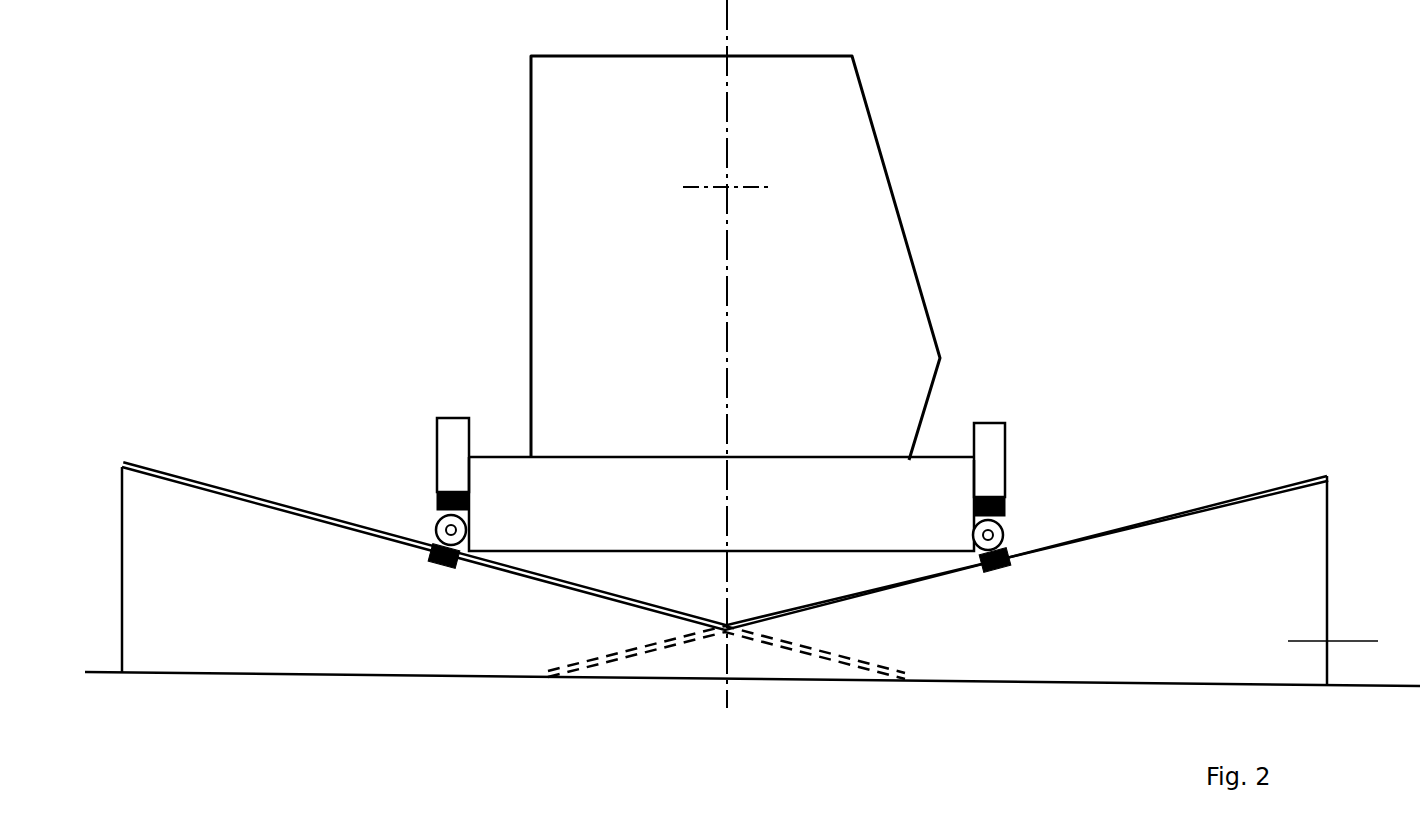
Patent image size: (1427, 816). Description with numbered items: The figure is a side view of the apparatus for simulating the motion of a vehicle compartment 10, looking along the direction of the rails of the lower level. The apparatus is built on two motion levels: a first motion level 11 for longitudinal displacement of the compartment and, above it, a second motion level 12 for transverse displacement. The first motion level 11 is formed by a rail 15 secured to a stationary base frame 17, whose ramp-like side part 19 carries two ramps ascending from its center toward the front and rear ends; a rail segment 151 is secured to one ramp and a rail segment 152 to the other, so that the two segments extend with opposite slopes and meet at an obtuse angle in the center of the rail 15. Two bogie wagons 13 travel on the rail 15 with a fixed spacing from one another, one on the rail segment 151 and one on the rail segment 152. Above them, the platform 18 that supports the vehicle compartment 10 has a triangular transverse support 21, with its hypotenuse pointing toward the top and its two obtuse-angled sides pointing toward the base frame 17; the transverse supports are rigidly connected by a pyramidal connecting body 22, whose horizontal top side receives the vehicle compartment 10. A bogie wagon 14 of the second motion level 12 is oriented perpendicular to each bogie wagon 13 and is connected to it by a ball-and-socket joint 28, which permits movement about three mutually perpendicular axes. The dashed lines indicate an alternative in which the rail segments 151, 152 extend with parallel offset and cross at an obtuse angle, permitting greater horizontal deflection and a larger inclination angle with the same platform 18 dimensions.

The vehicle compartment 10 is at (681, 287).
The first motion level 11 is at (428, 571).
The second motion level 12 is at (430, 488).
The bogie wagon 13 is at (440, 568).
The bogie wagon 14 is at (465, 498).
The rail 15 is at (267, 496).
The base frame 17 is at (947, 684).
The platform 18 is at (505, 452).
The side part 19 is at (1353, 642).
The transverse support 21 is at (455, 432).
The connecting body 22 is at (912, 492).
The ball-and-socket joint 28 is at (440, 520).
The rail segment 151 is at (168, 478).
The rail segment 152 is at (1243, 494).